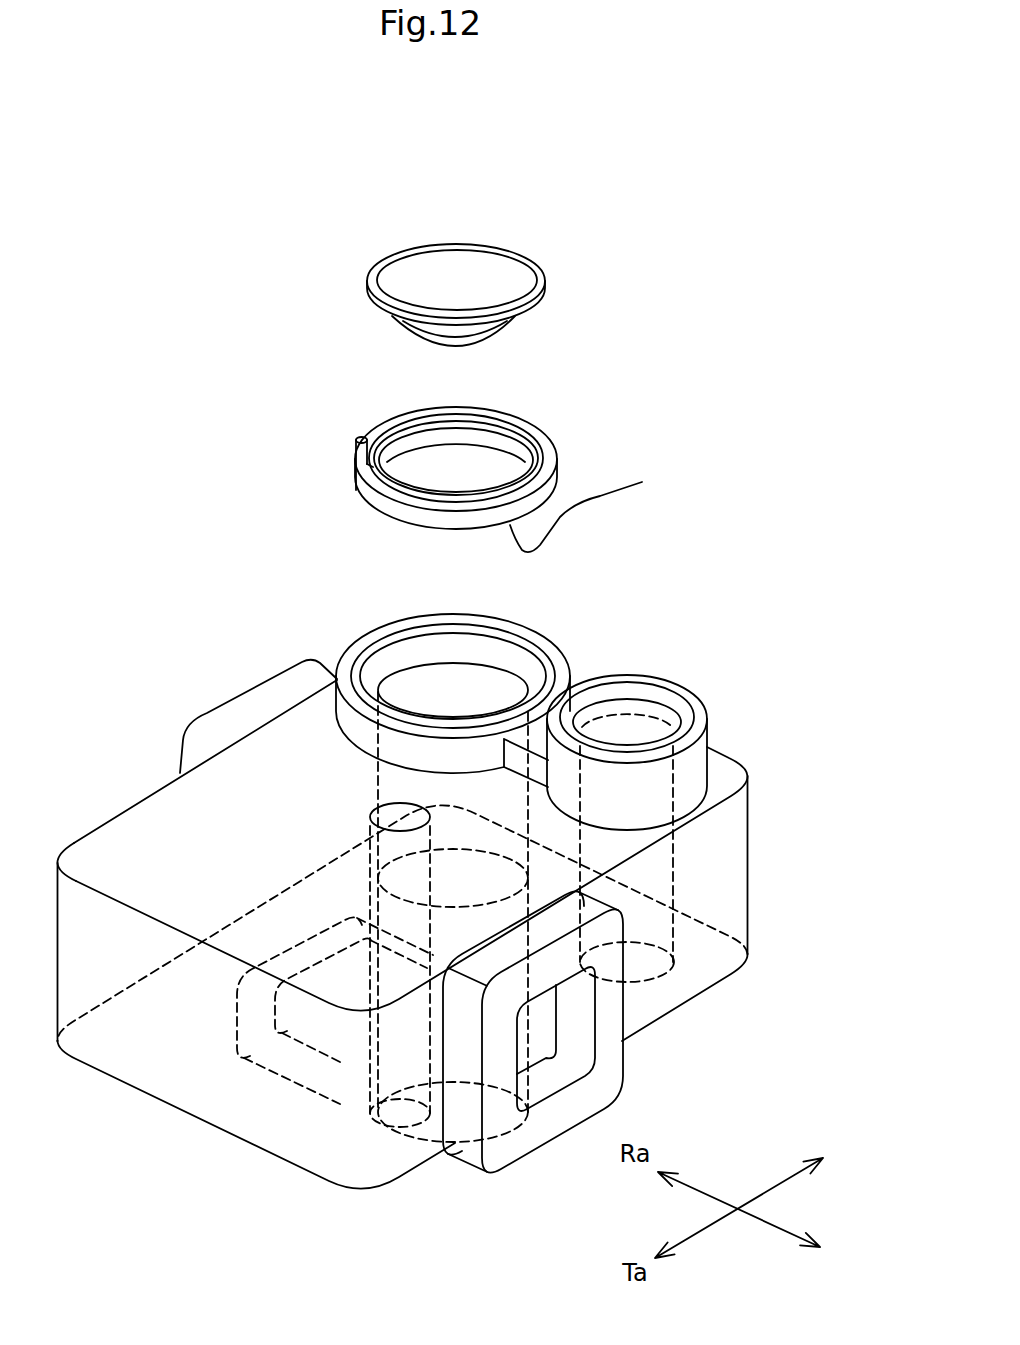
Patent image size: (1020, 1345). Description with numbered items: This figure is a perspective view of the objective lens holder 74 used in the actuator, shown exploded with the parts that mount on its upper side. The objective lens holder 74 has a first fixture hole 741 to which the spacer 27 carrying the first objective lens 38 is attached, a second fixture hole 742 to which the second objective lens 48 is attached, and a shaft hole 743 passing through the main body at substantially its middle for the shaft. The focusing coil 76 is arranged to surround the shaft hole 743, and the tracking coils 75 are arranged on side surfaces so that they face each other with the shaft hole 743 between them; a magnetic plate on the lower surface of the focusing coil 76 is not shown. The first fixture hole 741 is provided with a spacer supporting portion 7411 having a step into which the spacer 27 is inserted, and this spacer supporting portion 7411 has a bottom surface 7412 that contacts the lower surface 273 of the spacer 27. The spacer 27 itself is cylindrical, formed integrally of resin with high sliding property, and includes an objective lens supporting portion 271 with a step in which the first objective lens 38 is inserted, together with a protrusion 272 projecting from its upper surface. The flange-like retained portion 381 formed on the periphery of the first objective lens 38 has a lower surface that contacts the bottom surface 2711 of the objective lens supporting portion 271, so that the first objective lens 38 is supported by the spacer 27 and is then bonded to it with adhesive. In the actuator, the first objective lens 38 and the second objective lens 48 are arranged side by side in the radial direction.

The first objective lens 38 is at (367, 278).
The retained portion 381 is at (542, 290).
The spacer 27 is at (533, 438).
The objective lens supporting portion 271 is at (543, 462).
The protrusion 272 is at (358, 440).
The bottom surface 2711 is at (358, 487).
The lower surface 273 is at (642, 482).
The objective lens holder 74 is at (173, 470).
The first fixture hole 741 is at (375, 782).
The spacer supporting portion 7411 is at (360, 670).
The bottom surface 7412 is at (537, 678).
The second objective lens 48 is at (672, 712).
The second fixture hole 742 is at (673, 782).
The shaft hole 743 is at (367, 897).
The tracking coils 75 is at (243, 715).
The focusing coil 76 is at (283, 1060).